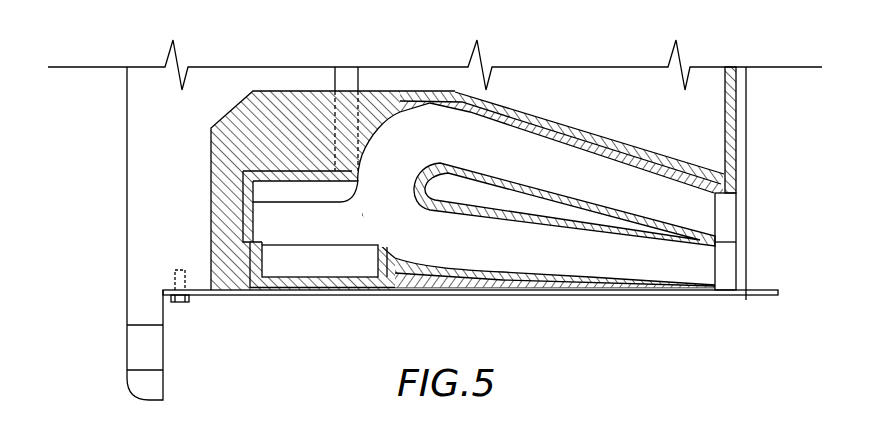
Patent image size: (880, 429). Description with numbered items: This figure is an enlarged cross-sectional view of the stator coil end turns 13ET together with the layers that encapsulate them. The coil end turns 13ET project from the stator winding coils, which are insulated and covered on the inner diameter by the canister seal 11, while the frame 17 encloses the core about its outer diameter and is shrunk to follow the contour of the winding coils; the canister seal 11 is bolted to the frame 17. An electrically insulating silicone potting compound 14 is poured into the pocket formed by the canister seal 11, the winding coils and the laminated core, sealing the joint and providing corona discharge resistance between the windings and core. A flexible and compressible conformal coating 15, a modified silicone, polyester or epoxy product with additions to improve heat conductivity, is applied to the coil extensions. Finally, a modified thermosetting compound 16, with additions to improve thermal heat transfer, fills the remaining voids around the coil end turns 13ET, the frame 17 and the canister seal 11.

The canister seal 11 is at (366, 294).
The coil end turns 13ET is at (578, 163).
The silicone potting compound 14 is at (636, 293).
The conformal coating 15 is at (500, 110).
The thermosetting compound 16 is at (240, 122).
The frame 17 is at (642, 92).